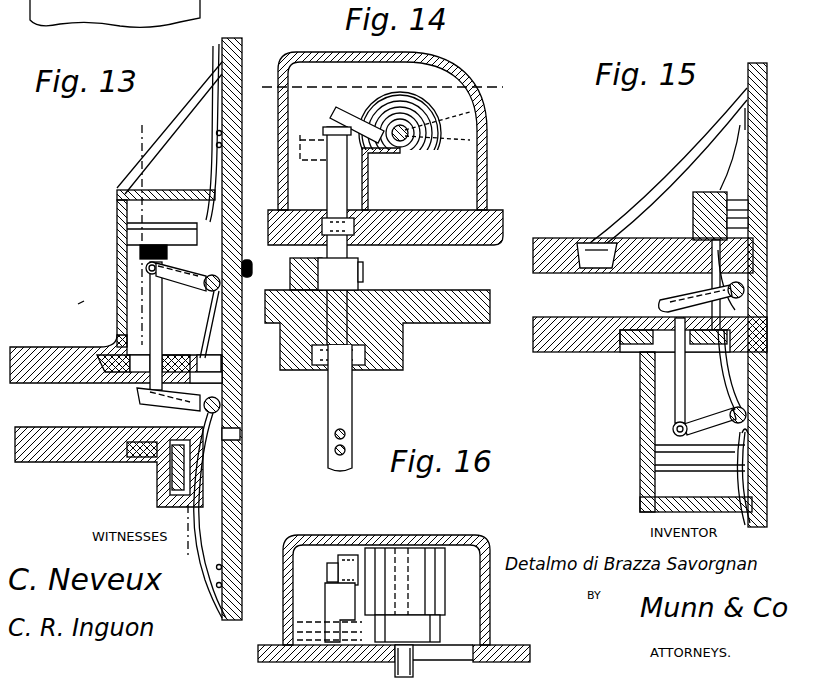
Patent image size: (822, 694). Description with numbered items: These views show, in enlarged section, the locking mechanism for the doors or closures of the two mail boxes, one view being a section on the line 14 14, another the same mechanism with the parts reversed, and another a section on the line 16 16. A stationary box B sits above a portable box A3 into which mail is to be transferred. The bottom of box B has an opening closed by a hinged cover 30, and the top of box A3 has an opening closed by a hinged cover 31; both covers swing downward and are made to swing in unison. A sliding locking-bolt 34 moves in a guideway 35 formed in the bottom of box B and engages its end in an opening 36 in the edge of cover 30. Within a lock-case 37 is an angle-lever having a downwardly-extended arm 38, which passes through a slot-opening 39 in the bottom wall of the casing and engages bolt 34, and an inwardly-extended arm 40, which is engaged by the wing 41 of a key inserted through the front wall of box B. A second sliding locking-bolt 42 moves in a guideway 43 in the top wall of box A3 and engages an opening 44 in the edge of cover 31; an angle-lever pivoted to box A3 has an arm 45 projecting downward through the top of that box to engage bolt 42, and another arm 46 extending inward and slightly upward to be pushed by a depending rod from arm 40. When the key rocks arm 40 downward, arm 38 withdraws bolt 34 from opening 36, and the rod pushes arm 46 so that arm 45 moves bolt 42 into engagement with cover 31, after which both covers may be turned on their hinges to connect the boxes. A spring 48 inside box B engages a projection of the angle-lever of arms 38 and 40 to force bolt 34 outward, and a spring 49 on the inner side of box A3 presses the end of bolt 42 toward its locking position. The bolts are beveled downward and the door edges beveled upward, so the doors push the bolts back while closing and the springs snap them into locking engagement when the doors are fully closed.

In FIG. 13, the section line 14 14 is at (170, 337).
In FIG. 14, the section line 16 16 is at (383, 89).
In FIG. 13, the hinged cover 30 is at (82, 342).
In FIG. 13, the hinged cover 31 is at (36, 463).
In FIG. 13, the sliding locking-bolt 34 is at (135, 378).
In FIG. 14, the sliding locking-bolt 34 is at (372, 216).
In FIG. 15, the sliding locking-bolt 34 is at (648, 347).
In FIG. 13, the guideway 35 is at (226, 380).
In FIG. 13, the opening 36 is at (110, 360).
In FIG. 13, the lock-case 37 is at (128, 227).
In FIG. 14, the lock-case 37 is at (488, 140).
In FIG. 16, the lock-case 37 is at (394, 606).
In FIG. 15, the lock-case 37 is at (642, 417).
In FIG. 13, the downwardly-extended arm 38 is at (202, 343).
In FIG. 15, the downwardly-extended arm 38 is at (733, 392).
In FIG. 13, the slot-opening 39 is at (220, 360).
In FIG. 13, the inwardly-extended arm 40 is at (178, 276).
In FIG. 16, the inwardly-extended arm 40 is at (332, 603).
In FIG. 15, the inwardly-extended arm 40 is at (690, 433).
In FIG. 13, the wing of key 41 is at (141, 251).
In FIG. 14, the wing of key 41 is at (345, 108).
In FIG. 16, the wing of key 41 is at (357, 555).
In FIG. 13, the sliding locking-bolt 42 is at (148, 457).
In FIG. 14, the sliding locking-bolt 42 is at (376, 362).
In FIG. 15, the sliding locking-bolt 42 is at (590, 242).
In FIG. 13, the guideway 43 is at (213, 226).
In FIG. 13, the opening 44 is at (186, 335).
In FIG. 14, the opening 44 is at (330, 183).
In FIG. 15, the opening 44 is at (676, 382).
In FIG. 13, the arm 45 is at (240, 432).
In FIG. 14, the arm 45 is at (356, 298).
In FIG. 15, the arm 45 is at (724, 248).
In FIG. 13, the arm 46 is at (186, 403).
In FIG. 15, the arm 46 is at (700, 290).
In FIG. 15, the spring 48 is at (738, 490).
In FIG. 13, the spring 49 is at (214, 528).
In FIG. 14, the spring 49 is at (357, 408).
In FIG. 15, the spring 49 is at (737, 178).
In FIG. 13, the box A3 is at (222, 558).
In FIG. 13, the stationary box B is at (87, 294).